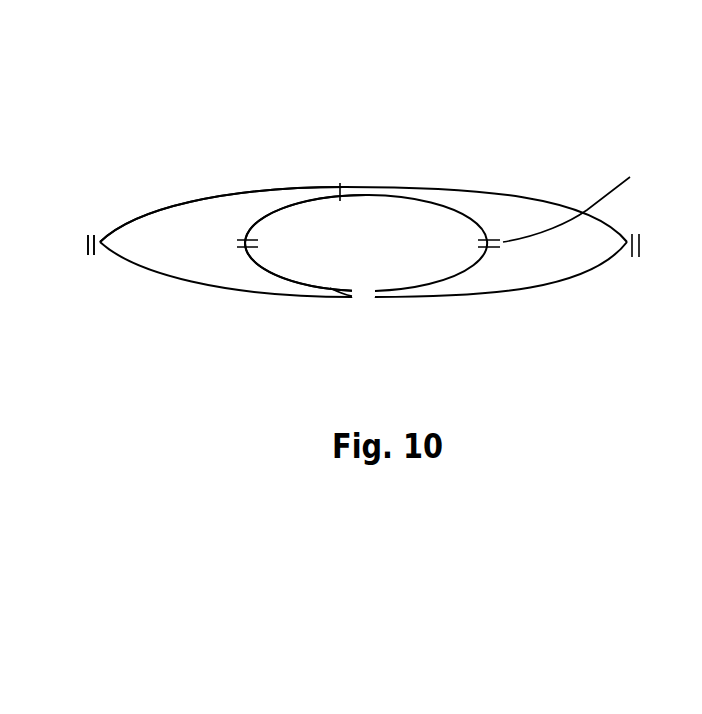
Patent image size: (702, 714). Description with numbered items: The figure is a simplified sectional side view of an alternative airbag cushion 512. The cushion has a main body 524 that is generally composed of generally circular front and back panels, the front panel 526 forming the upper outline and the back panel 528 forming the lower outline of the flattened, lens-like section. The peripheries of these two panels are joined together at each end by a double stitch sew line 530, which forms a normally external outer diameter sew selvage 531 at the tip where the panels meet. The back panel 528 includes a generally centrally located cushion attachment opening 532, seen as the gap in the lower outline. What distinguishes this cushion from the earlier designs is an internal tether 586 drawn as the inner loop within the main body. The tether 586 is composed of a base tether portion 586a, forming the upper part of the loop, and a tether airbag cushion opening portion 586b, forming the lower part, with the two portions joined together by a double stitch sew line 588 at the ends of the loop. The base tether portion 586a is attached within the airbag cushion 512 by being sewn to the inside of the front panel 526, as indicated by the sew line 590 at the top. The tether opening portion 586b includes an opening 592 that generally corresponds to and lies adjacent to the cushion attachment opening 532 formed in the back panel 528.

The airbag cushion 512 is at (333, 113).
The main body 524 is at (535, 194).
The front panel 526 is at (183, 198).
The back panel 528 is at (530, 292).
The double stitch sew line 530 is at (92, 258).
The outer diameter sew selvage 531 is at (82, 241).
The cushion attachment opening 532 is at (373, 304).
The internal tether 586 is at (453, 201).
The base tether portion 586a is at (275, 200).
The tether airbag cushion opening portion 586b is at (264, 284).
The double stitch sew line 588 is at (504, 242).
The sew line 590 is at (392, 196).
The opening 592 is at (352, 289).